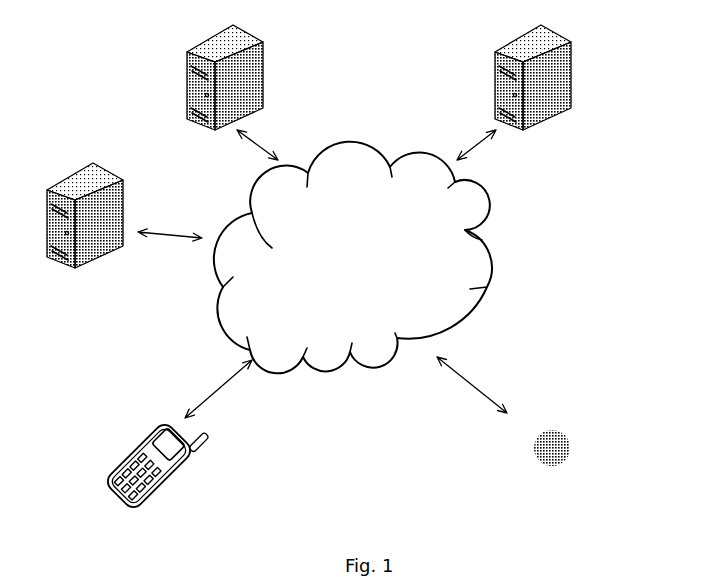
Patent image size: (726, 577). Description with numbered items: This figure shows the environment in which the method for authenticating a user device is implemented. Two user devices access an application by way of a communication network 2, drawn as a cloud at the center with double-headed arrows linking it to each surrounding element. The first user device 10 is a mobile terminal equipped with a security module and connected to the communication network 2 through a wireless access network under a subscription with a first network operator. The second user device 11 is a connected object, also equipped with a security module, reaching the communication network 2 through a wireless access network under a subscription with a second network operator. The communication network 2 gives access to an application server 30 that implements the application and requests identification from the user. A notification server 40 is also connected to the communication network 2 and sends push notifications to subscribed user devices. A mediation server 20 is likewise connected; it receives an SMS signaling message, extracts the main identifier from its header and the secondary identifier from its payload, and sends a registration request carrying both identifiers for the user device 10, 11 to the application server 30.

The communication network 2 is at (484, 193).
The first user device 10 is at (190, 458).
The second user device 11 is at (563, 458).
The mediation server 20 is at (124, 193).
The application server 30 is at (264, 56).
The notification server 40 is at (572, 56).